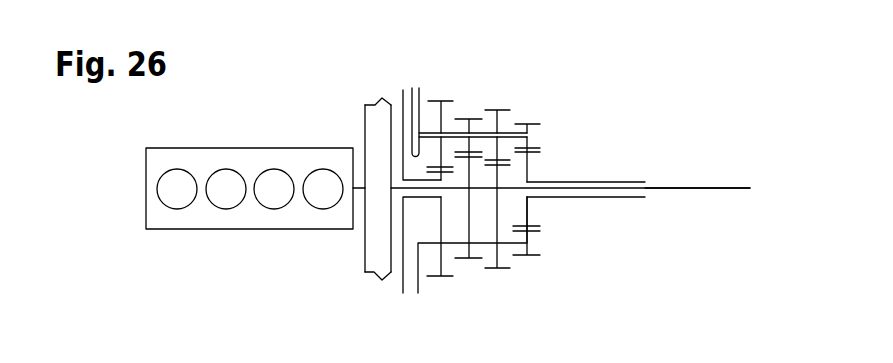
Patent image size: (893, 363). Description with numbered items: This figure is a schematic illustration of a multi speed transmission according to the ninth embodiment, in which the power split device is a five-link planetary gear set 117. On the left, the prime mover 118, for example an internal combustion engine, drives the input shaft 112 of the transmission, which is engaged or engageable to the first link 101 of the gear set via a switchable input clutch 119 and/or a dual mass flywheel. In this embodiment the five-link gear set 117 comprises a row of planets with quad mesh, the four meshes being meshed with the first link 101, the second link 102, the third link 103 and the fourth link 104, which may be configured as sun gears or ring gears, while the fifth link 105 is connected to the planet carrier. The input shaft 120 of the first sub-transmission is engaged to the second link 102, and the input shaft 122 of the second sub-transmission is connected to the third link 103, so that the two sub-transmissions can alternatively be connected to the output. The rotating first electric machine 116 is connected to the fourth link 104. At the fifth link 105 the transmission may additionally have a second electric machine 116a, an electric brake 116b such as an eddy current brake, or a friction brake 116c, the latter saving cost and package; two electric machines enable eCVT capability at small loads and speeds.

The first link 101 is at (498, 187).
The second link 102 is at (470, 186).
The third link 103 is at (530, 223).
The fourth link 104 is at (440, 200).
The fifth link 105 is at (412, 88).
The input shaft 112 is at (354, 168).
The first electric machine 116 is at (402, 90).
The second electric machine 116a is at (426, 88).
The electric brake 116b is at (527, 152).
The friction brake 116c is at (570, 157).
The five-link planetary gear set 117 is at (490, 273).
The prime mover 118 is at (153, 157).
The switchable input clutch 119 is at (367, 259).
The input shaft of the first sub-transmission 120 is at (698, 188).
The input shaft of the second sub-transmission 122 is at (633, 200).